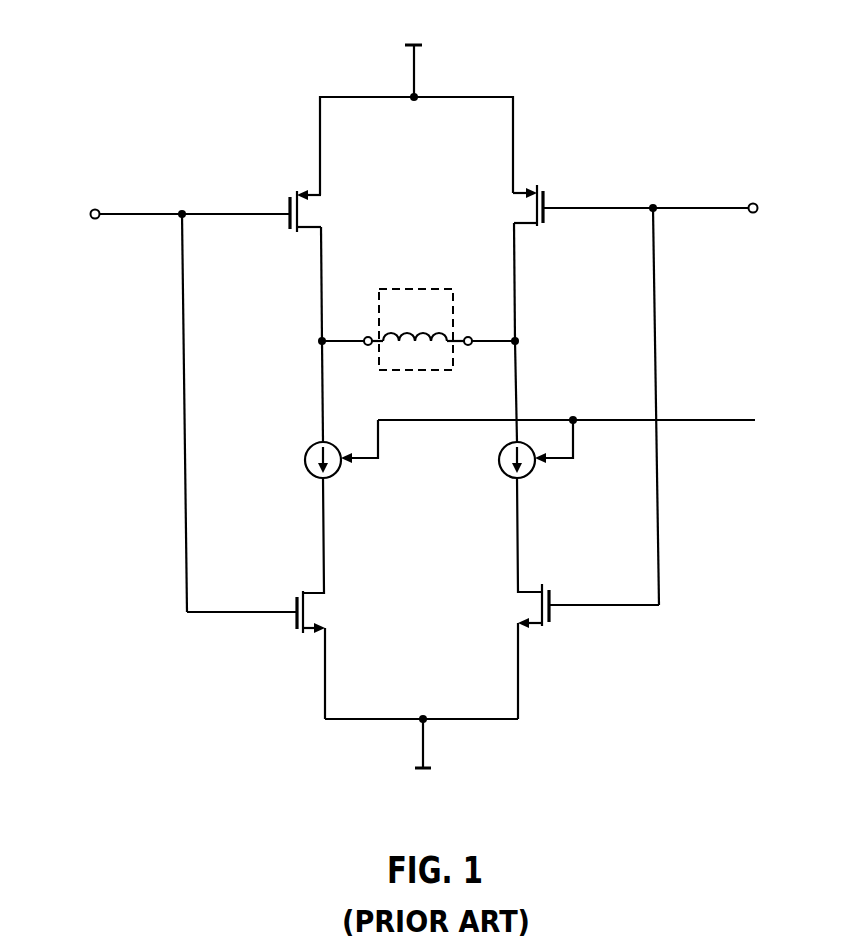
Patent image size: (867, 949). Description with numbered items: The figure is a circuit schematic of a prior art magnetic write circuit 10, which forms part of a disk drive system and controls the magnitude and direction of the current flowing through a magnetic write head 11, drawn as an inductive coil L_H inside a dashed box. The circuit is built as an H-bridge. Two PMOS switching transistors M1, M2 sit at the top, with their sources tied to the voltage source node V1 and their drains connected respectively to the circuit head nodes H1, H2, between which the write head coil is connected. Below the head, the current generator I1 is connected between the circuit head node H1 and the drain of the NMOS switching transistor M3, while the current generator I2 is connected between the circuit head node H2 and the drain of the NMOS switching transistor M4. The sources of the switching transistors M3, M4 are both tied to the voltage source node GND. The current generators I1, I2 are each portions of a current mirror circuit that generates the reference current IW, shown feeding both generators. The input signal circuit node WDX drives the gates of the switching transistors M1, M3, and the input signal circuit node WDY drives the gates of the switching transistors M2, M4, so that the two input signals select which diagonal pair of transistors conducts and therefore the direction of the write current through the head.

The prior art magnetic write circuit 10 is at (204, 68).
The magnetic write head 11 is at (425, 289).
The voltage source node V1 is at (414, 60).
The switching transistor M1 is at (325, 211).
The switching transistor M2 is at (507, 205).
The switching transistor M3 is at (276, 612).
The switching transistor M4 is at (567, 606).
The current generator I1 is at (311, 460).
The current generator I2 is at (500, 460).
The circuit head node H1 is at (350, 329).
The circuit head node H2 is at (483, 329).
The reference current IW is at (566, 435).
The input signal circuit node WDX is at (157, 215).
The input signal circuit node WDY is at (682, 209).
The voltage source node GND is at (423, 760).